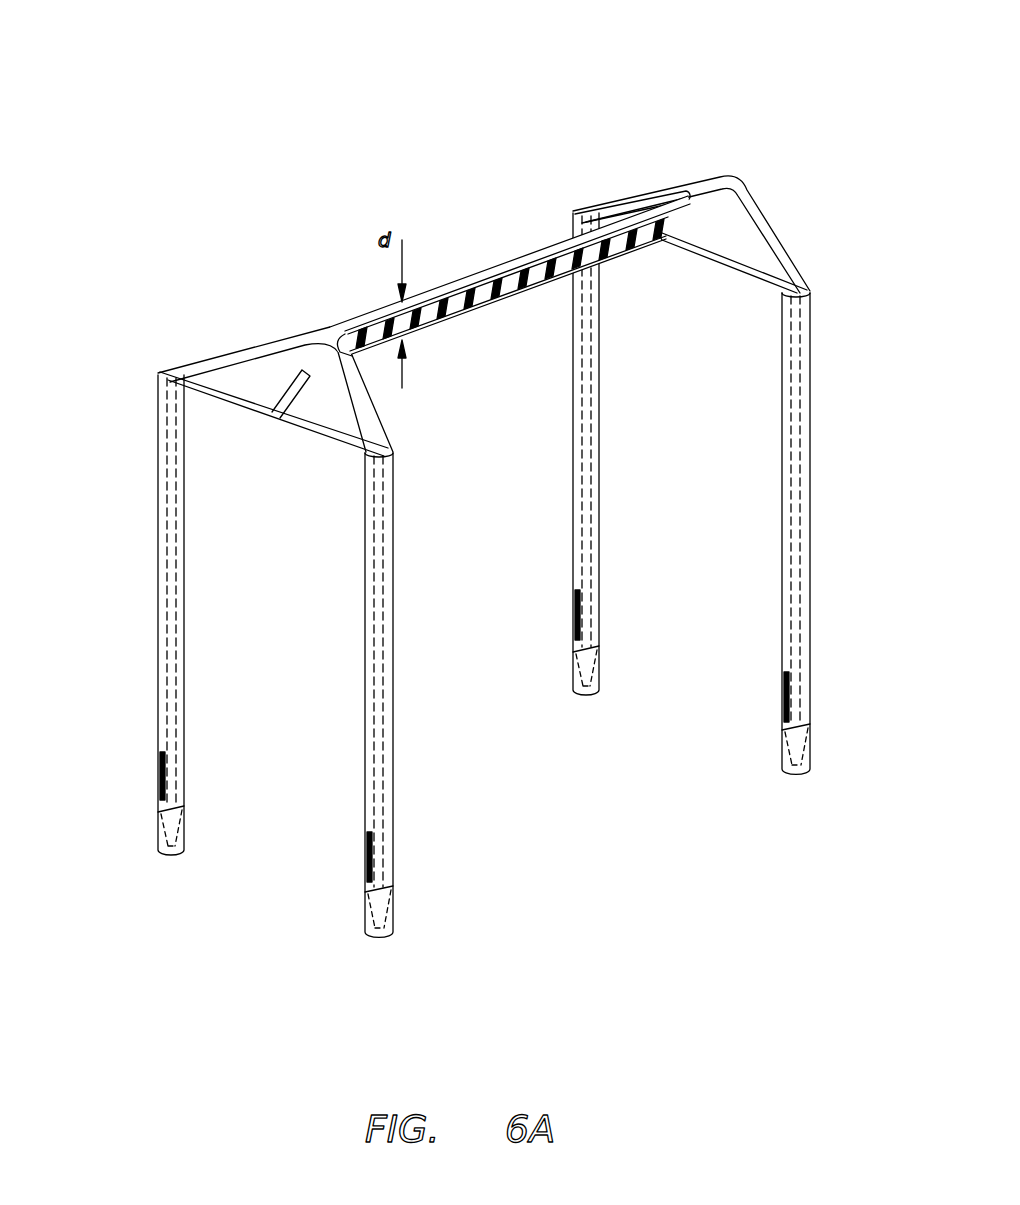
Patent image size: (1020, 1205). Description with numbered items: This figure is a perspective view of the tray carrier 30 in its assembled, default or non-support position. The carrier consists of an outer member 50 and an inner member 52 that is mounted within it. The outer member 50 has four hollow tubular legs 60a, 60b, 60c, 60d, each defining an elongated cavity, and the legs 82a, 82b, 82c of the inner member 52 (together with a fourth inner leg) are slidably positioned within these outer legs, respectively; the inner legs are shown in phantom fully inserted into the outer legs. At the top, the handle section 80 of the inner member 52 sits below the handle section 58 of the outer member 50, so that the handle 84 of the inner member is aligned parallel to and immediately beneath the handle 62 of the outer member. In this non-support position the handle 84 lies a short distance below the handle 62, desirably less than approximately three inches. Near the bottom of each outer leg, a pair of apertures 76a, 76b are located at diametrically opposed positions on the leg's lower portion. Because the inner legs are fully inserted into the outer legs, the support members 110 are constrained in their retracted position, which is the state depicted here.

The tray carrier 30 is at (764, 76).
The outer member 50 is at (126, 441).
The inner member 52 is at (280, 432).
The handle section of the outer member 58 is at (728, 186).
The leg of the outer member 60a is at (158, 575).
The leg of the outer member 60b is at (367, 640).
The leg of the outer member 60c is at (600, 402).
The leg of the outer member 60d is at (812, 468).
The handle of the outer member 62 is at (510, 272).
The aperture 76a is at (159, 757).
The aperture 76b is at (184, 762).
The handle section of the inner member 80 is at (672, 258).
The leg of the inner member 82a is at (172, 372).
The leg of the inner member 82b is at (367, 487).
The leg of the inner member 82c is at (600, 476).
The handle of the inner member 84 is at (622, 245).
The support member 110 is at (605, 608).